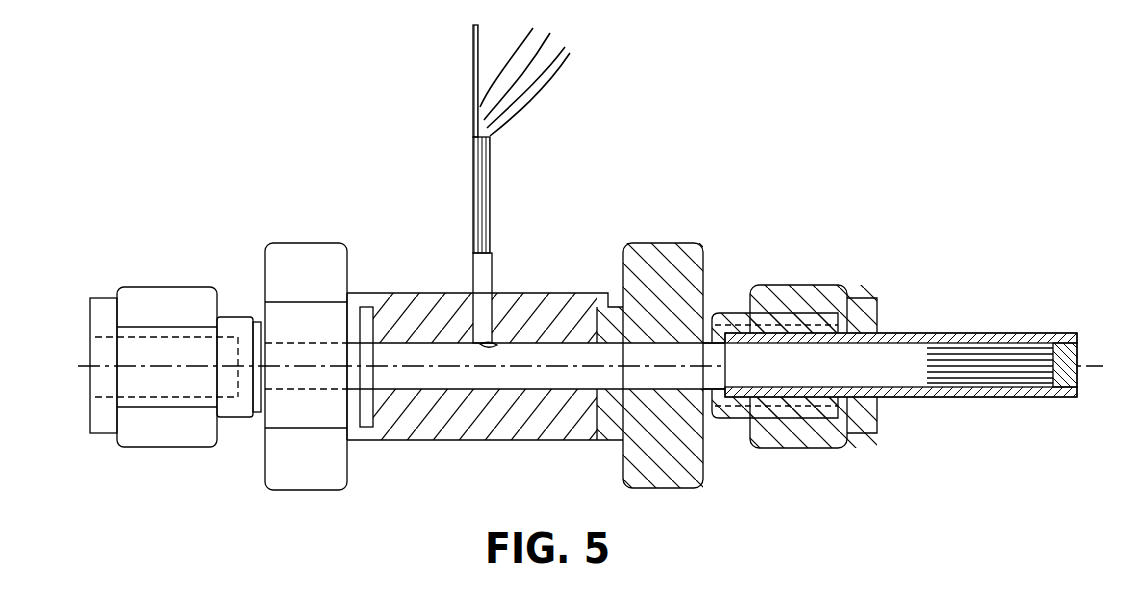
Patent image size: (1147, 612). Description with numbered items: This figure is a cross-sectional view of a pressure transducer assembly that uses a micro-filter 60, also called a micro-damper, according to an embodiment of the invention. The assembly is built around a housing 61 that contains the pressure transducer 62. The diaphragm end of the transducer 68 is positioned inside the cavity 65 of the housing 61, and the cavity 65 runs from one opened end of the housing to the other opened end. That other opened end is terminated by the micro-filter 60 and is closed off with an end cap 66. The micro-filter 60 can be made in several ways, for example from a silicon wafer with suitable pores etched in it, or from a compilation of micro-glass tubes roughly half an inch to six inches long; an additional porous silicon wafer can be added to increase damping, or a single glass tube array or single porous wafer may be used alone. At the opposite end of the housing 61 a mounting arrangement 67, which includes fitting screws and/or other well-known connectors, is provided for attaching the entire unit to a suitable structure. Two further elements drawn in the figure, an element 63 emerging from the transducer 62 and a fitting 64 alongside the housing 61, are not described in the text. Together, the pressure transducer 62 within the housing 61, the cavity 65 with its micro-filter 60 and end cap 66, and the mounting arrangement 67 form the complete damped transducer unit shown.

The micro-filter 60 is at (980, 333).
The housing 61 is at (398, 292).
The pressure transducer 62 is at (474, 250).
The sensor pin 63 is at (495, 335).
The hex nut fitting 64 is at (668, 243).
The cavity 65 is at (462, 374).
The end cap 66 is at (1067, 338).
The mounting arrangement 67 is at (180, 287).
The diaphragm end of the transducer 68 is at (490, 345).